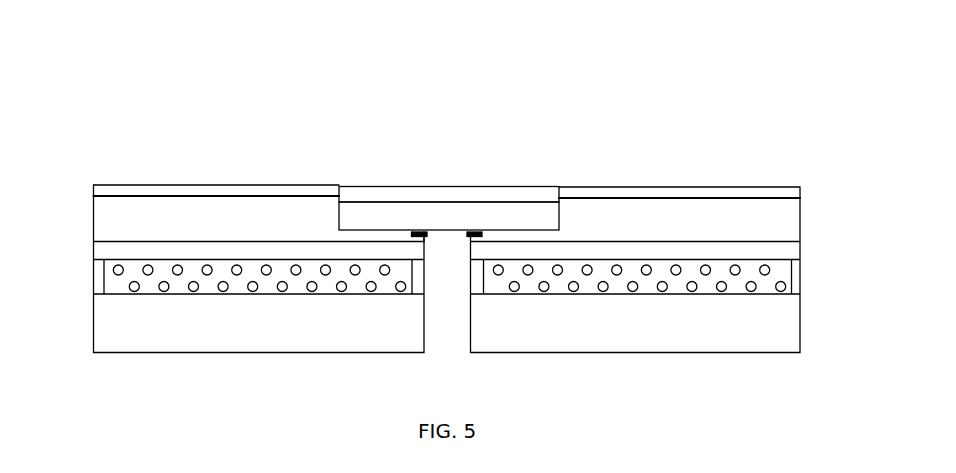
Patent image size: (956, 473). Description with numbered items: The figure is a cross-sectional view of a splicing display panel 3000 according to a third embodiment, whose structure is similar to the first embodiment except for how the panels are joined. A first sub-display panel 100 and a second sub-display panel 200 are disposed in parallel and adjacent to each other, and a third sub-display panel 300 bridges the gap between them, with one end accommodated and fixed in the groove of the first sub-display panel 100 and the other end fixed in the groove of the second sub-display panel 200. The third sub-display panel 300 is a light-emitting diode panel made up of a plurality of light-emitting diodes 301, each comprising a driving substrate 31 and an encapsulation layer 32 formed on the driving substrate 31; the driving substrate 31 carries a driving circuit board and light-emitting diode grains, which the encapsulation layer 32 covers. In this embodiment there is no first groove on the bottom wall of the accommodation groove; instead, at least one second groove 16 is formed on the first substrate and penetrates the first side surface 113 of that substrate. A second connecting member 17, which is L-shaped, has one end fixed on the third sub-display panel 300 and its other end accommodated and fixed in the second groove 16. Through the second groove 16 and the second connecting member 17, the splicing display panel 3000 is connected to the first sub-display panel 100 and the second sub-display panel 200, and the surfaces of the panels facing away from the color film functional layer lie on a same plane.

The splicing display panel 3000 is at (456, 22).
The first sub-display panel 100 is at (88, 178).
The second sub-display panel 200 is at (802, 182).
The third sub-display panel 300 is at (449, 165).
The light-emitting diode 301 is at (449, 183).
The driving substrate 31 is at (505, 131).
The encapsulation layer 32 is at (493, 202).
The second groove 16 is at (414, 240).
The second connecting member 17 is at (425, 237).
The first side surface 113 is at (471, 241).